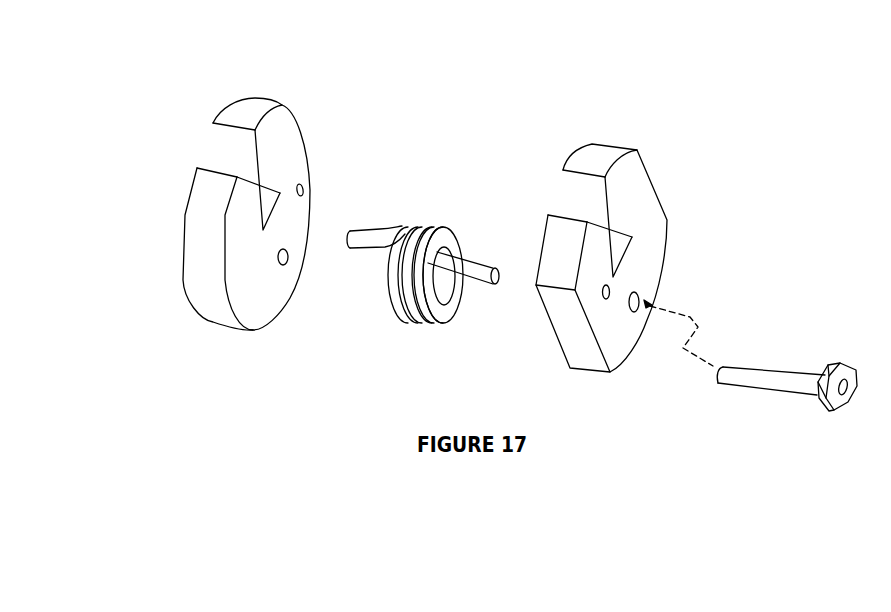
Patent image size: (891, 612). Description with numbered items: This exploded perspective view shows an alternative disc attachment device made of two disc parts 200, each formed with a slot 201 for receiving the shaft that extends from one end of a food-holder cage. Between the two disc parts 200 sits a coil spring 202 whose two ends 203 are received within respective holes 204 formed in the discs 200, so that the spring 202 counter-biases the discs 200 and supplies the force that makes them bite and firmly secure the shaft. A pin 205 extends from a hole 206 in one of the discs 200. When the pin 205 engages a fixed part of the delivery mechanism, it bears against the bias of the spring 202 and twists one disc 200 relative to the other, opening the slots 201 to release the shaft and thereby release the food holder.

The disc part 200 is at (298, 84).
The slot 201 is at (215, 158).
The coil spring 202 is at (432, 232).
The spring end 203 is at (356, 230).
The hole 204 is at (300, 183).
The pin 205 is at (793, 365).
The hole 206 is at (648, 303).